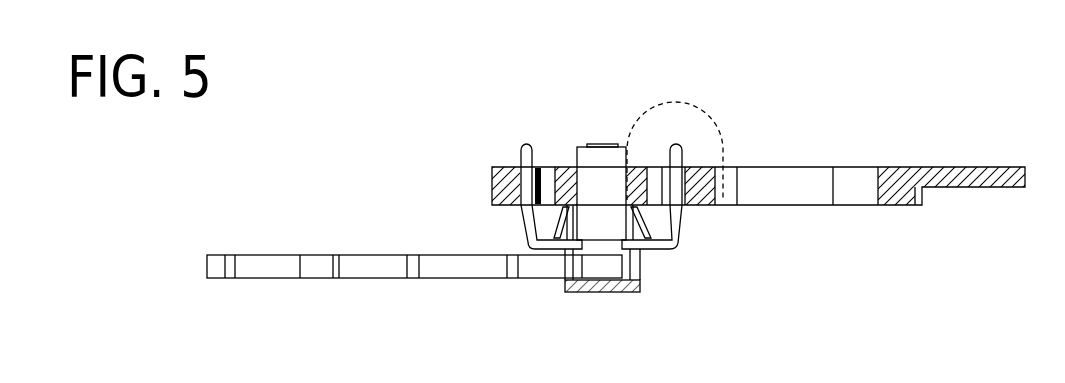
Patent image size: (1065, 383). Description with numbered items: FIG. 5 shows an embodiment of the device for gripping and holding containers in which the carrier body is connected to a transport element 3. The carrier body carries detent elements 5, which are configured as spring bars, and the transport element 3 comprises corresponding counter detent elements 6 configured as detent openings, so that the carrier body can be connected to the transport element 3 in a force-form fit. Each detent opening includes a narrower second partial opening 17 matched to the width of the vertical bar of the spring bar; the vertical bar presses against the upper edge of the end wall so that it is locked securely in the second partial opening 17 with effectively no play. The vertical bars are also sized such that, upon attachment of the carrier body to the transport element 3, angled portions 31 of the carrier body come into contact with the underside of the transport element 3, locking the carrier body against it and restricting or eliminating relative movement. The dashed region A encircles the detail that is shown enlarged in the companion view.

The transport element 3 is at (974, 204).
The detent elements 5 is at (546, 157).
The counter detent elements 6 is at (601, 157).
The second partial opening 17 is at (527, 168).
The angled portions 31 is at (664, 230).
The region A is at (705, 113).